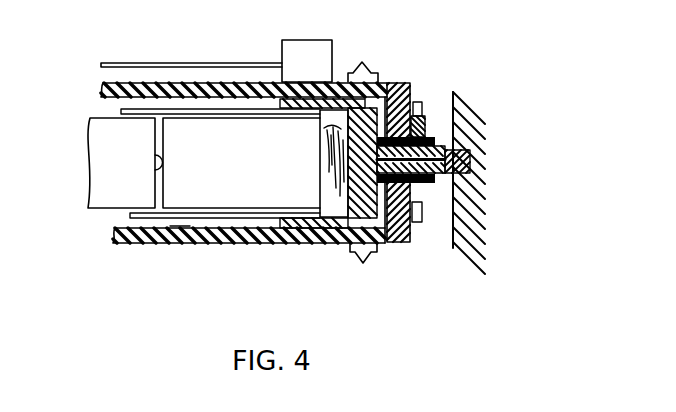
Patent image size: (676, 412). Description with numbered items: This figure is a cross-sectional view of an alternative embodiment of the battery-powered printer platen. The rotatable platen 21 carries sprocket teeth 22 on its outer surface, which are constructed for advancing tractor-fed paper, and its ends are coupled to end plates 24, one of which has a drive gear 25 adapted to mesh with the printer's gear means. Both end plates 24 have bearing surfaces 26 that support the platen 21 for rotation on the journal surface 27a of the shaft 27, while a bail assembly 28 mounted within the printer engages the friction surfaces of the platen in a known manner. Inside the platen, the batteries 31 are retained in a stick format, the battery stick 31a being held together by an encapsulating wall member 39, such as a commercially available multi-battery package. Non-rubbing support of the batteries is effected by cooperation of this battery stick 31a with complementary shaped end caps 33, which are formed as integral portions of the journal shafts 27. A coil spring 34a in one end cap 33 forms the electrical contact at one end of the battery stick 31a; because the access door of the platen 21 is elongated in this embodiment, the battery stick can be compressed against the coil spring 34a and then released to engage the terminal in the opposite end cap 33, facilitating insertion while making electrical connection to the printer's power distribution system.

The rotatable platen 21 is at (220, 236).
The sprocket teeth 22 is at (366, 64).
The end plate 24 is at (397, 83).
The drive gear 25 is at (424, 105).
The bearing surface 26 is at (408, 205).
The shaft 27 is at (472, 148).
The journal surface 27a is at (456, 178).
The bail assembly 28 is at (224, 58).
The battery 31 is at (131, 171).
The battery stick 31a is at (148, 226).
The end cap 33 is at (330, 228).
The coil spring 34a is at (323, 128).
The encapsulating wall member 39 is at (180, 230).